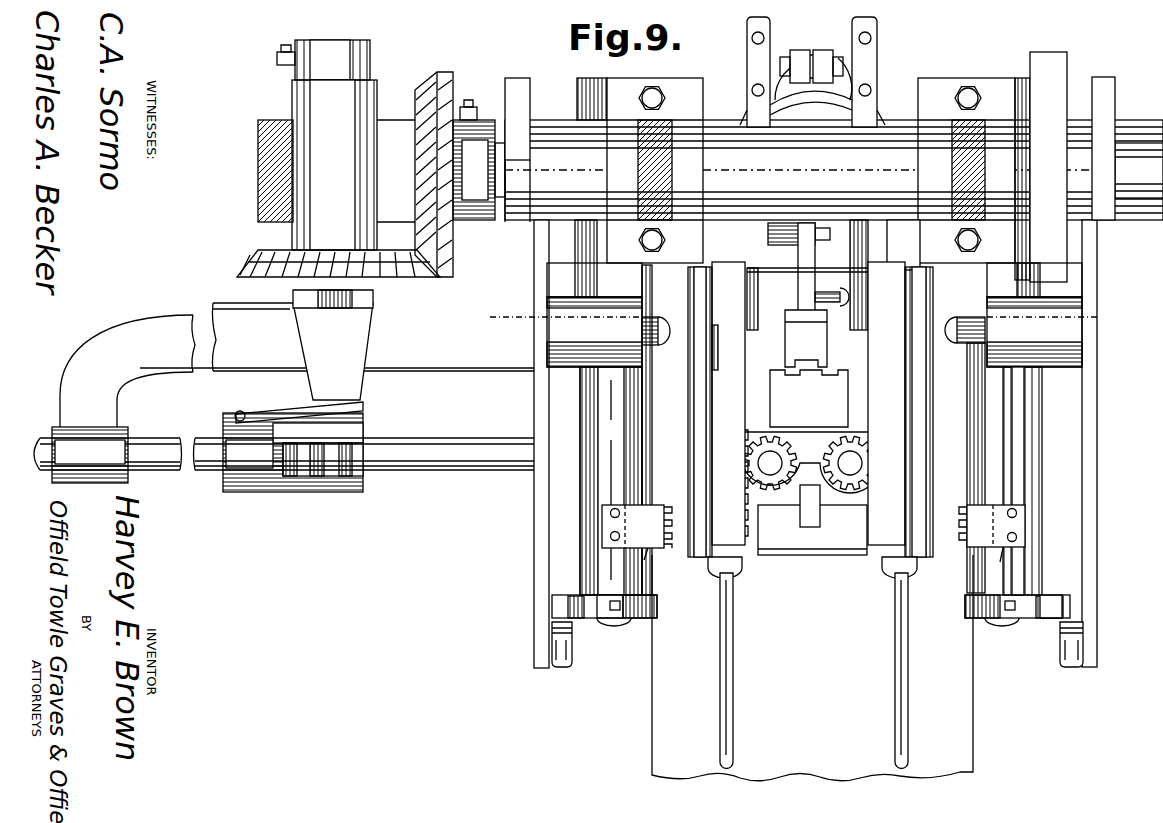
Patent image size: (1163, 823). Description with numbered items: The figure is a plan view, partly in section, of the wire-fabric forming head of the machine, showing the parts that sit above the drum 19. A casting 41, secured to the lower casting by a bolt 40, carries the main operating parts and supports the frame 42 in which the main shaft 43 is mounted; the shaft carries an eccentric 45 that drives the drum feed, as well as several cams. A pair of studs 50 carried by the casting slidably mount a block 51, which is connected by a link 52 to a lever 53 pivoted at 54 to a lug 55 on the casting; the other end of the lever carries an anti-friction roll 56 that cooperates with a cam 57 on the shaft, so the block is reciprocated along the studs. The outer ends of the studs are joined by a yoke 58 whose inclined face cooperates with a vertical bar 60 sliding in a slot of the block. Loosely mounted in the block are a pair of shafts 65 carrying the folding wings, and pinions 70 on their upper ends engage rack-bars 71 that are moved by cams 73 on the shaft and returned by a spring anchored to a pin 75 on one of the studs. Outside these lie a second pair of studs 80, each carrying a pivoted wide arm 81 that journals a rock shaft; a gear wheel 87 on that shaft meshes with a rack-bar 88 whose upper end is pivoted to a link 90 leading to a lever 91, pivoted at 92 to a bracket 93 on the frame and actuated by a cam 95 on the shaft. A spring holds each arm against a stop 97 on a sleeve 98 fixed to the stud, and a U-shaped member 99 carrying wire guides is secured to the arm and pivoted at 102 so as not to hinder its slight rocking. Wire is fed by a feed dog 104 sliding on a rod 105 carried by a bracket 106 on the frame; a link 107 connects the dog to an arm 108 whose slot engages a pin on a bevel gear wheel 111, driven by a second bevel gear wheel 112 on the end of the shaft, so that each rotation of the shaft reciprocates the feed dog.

The drum 19 is at (812, 668).
The bolt 40 is at (812, 52).
The casting 41 is at (846, 62).
The frame 42 is at (258, 172).
The main shaft 43 is at (1135, 148).
The eccentric 45 is at (1048, 167).
The studs 50 is at (712, 350).
The block 51 is at (809, 398).
The link 52 is at (790, 345).
The lever 53 is at (798, 292).
The pivot 54 is at (845, 280).
The lug 55 is at (841, 298).
The anti-friction roll 56 is at (790, 245).
The cam 57 is at (780, 52).
The yoke 58 is at (812, 530).
The vertical bar 60 is at (808, 515).
The shafts 65 is at (850, 463).
The pinions 70 is at (770, 463).
The rack-bars 71 is at (808, 403).
The cams 73 is at (748, 42).
The pin 75 is at (733, 712).
The studs 80 is at (617, 622).
The arm 81 is at (598, 620).
The gear wheel 87 is at (657, 612).
The rack-bars 88 is at (560, 605).
The link 90 is at (563, 668).
The lever 91 is at (534, 515).
The pivot 92 is at (672, 308).
The bracket 93 is at (1113, 318).
The cam 95 is at (1112, 100).
The stop 97 is at (510, 92).
The sleeve 98 is at (645, 435).
The U-shaped member 99 is at (662, 503).
The pivot point 102 is at (823, 567).
The feed dog 104 is at (325, 485).
The rod 105 is at (428, 472).
The bracket 106 is at (297, 365).
The link 107 is at (363, 408).
The arm 108 is at (365, 330).
The bevel gear wheel 111 is at (258, 254).
The bevel gear wheel 112 is at (437, 78).